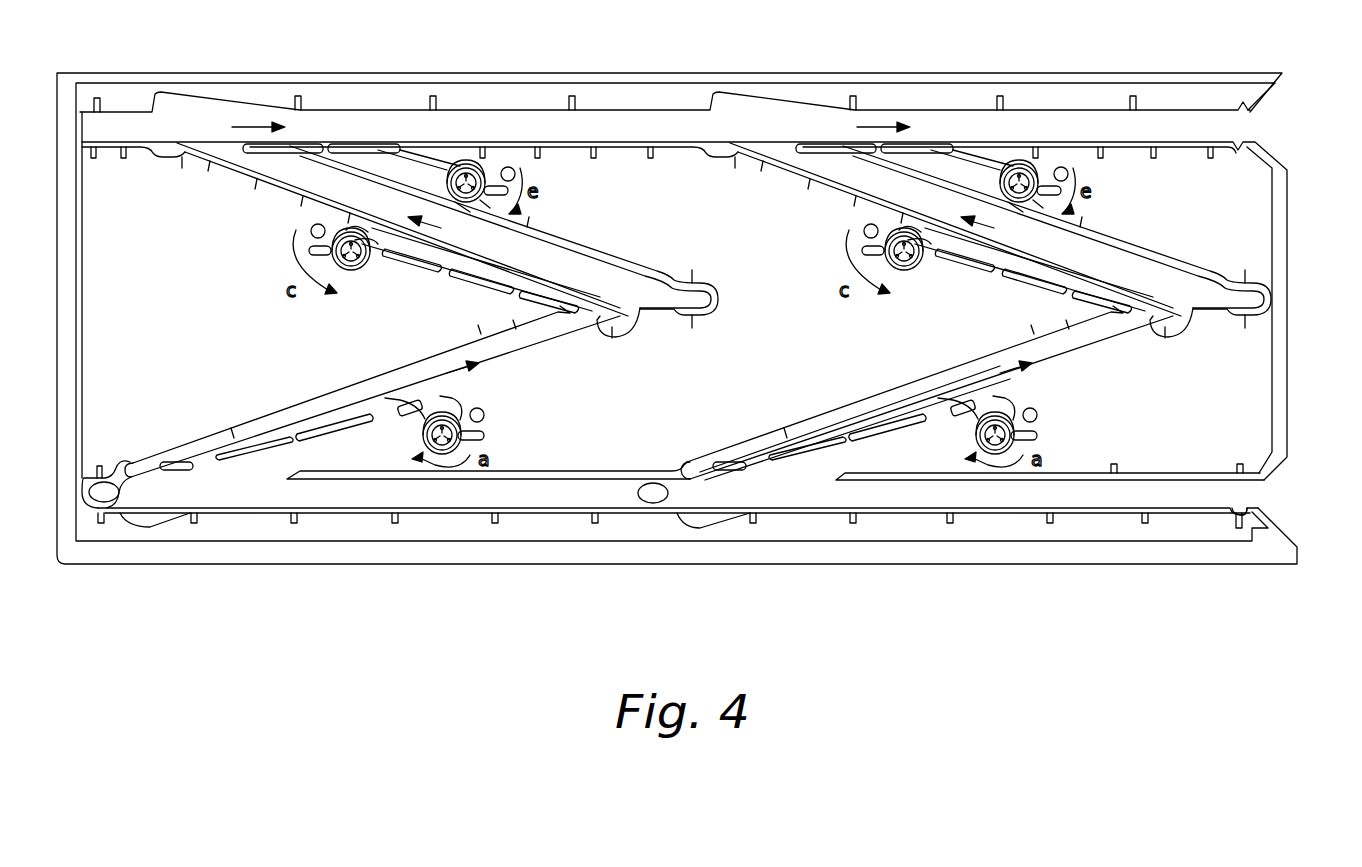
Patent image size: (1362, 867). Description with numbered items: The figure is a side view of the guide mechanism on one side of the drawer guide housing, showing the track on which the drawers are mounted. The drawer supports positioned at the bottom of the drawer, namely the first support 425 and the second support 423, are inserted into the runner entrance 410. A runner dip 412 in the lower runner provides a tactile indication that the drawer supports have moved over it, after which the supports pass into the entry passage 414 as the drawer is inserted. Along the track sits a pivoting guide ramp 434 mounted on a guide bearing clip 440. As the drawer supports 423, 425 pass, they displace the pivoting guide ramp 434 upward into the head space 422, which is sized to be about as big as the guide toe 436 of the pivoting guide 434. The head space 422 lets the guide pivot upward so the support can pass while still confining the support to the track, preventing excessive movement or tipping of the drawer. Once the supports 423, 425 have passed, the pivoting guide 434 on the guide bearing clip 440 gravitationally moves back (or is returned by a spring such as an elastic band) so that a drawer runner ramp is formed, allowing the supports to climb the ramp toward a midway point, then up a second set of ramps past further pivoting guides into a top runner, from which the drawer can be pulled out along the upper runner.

The runner entrance 410 is at (1272, 497).
The runner dip 412 is at (1243, 507).
The entry passage 414 is at (1096, 500).
The head space 422 is at (675, 462).
The second support 423 is at (660, 489).
The first support 425 is at (108, 485).
The pivoting guide ramp 434 is at (932, 442).
The guide toe 436 is at (707, 463).
The guide bearing clip 440 is at (1012, 436).